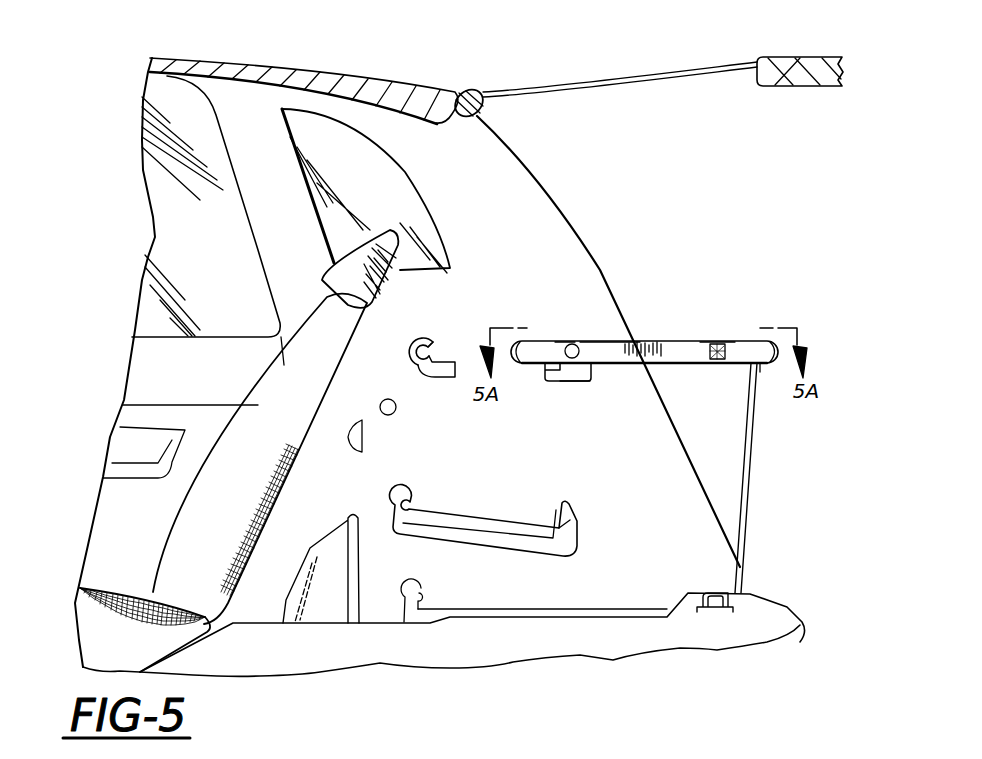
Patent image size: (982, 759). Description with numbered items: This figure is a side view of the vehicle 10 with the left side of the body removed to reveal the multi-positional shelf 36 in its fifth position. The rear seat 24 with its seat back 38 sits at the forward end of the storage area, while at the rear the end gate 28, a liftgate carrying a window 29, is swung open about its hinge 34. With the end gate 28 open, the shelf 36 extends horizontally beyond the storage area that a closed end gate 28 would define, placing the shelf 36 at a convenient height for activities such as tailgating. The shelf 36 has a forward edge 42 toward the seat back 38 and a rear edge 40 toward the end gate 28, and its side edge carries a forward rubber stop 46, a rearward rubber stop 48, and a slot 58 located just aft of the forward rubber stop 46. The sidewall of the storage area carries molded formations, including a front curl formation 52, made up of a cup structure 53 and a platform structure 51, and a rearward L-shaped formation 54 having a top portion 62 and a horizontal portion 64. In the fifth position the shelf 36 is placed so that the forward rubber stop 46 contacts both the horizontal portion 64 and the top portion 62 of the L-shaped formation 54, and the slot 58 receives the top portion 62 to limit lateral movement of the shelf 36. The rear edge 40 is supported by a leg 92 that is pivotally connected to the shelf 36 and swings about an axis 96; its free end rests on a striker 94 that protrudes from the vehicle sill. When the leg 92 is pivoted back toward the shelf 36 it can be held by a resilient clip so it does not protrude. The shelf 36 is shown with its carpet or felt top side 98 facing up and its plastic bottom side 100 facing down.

The vehicle 10 is at (422, 64).
The rear seat 24 is at (183, 530).
The end gate 28 is at (805, 78).
The window 29 is at (628, 68).
The hinge 34 is at (459, 92).
The multi-positional shelf 36 is at (673, 355).
The seat back 38 is at (318, 437).
The rear edge 40 is at (778, 365).
The forward edge 42 is at (503, 340).
The forward rubber stop 46 is at (563, 340).
The rearward rubber stop 48 is at (720, 344).
The platform structure 51 is at (432, 378).
The front curl formation 52 is at (455, 342).
The cup structure 53 is at (412, 333).
The L-shaped formation 54 is at (600, 388).
The slot 58 is at (590, 350).
The top portion 62 is at (577, 342).
The horizontal portion 64 is at (555, 382).
The leg 92 is at (755, 490).
The striker 94 is at (715, 573).
The axis 96 is at (780, 343).
The top side 98 is at (712, 343).
The bottom side 100 is at (690, 363).